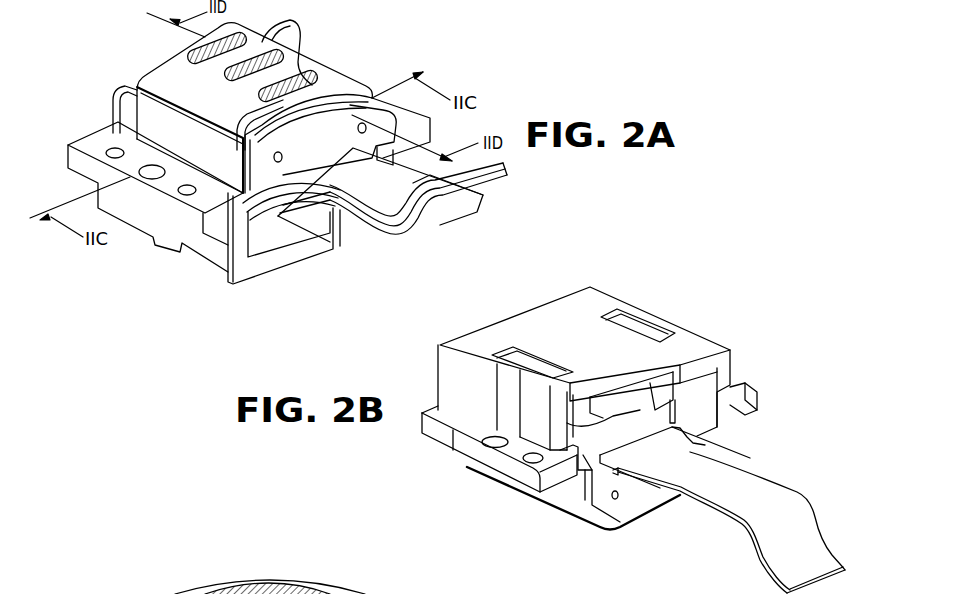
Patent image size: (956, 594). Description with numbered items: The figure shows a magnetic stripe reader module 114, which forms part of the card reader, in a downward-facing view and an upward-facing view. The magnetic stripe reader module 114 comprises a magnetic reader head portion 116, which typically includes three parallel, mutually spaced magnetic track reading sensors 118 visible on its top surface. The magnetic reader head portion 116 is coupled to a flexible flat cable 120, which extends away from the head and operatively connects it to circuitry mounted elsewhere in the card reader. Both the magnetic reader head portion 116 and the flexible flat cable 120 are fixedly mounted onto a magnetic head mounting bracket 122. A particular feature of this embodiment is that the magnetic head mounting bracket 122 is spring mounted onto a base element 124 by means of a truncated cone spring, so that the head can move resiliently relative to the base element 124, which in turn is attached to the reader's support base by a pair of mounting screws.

In FIG. 2A, the magnetic stripe reader module 114 is at (147, 117).
In FIG. 2A, the magnetic reader head portion 116 is at (158, 68).
In FIG. 2A, the magnetic track reading sensors 118 is at (272, 36).
In FIG. 2A, the flexible flat cable 120 is at (390, 210).
In FIG. 2B, the flexible flat cable 120 is at (743, 490).
In FIG. 2A, the magnetic head mounting bracket 122 is at (313, 137).
In FIG. 2A, the base element 124 is at (210, 252).
In FIG. 2B, the base element 124 is at (590, 307).